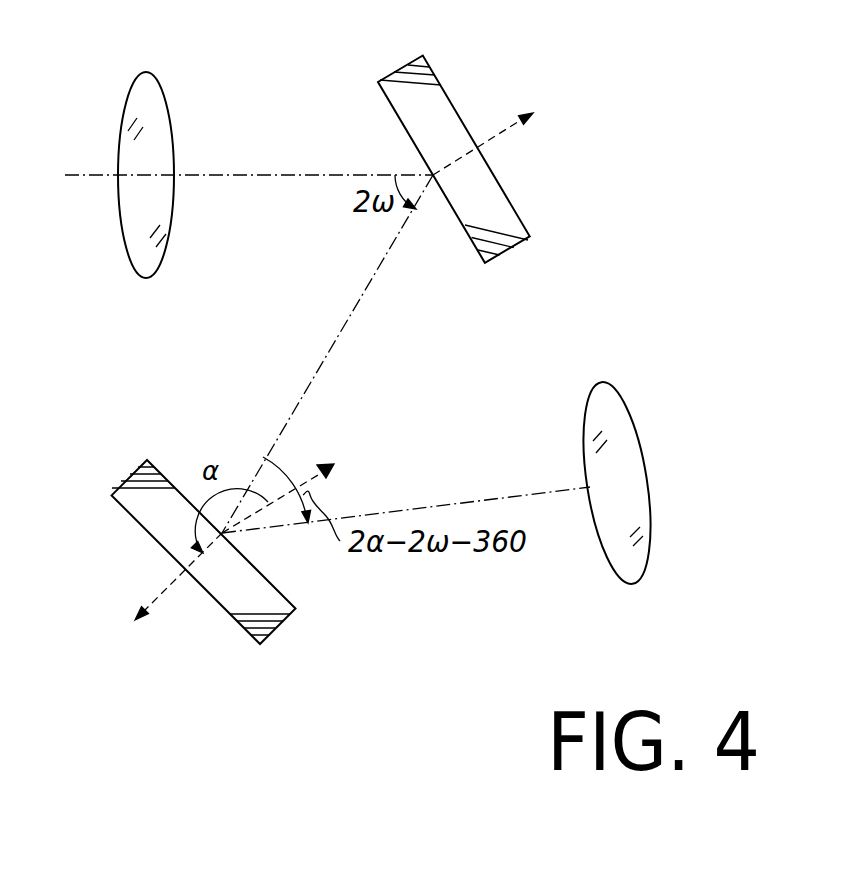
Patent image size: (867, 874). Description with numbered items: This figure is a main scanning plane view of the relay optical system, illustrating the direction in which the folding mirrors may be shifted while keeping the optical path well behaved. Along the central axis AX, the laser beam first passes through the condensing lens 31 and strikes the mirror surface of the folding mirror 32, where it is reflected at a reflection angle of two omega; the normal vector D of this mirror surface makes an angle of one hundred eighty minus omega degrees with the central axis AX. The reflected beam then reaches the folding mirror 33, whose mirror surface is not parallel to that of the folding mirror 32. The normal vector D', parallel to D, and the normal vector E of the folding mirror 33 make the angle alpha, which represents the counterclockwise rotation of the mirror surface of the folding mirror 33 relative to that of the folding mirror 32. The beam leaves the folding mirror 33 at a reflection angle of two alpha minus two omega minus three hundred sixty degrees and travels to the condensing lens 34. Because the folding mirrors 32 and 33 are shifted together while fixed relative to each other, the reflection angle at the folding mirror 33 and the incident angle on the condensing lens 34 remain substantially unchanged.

The condensing lens 31 is at (132, 117).
The folding mirror 32 is at (518, 222).
The folding mirror 33 is at (143, 505).
The condensing lens 34 is at (637, 503).
The central axis AX is at (278, 175).
The normal vector D is at (483, 118).
The normal vector D' is at (278, 468).
The normal vector E is at (157, 599).